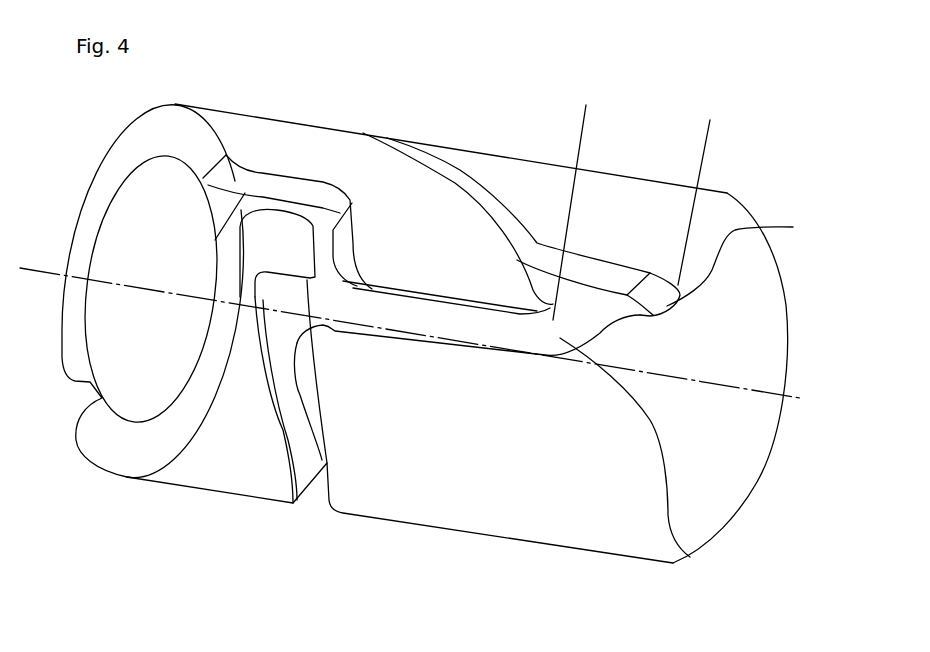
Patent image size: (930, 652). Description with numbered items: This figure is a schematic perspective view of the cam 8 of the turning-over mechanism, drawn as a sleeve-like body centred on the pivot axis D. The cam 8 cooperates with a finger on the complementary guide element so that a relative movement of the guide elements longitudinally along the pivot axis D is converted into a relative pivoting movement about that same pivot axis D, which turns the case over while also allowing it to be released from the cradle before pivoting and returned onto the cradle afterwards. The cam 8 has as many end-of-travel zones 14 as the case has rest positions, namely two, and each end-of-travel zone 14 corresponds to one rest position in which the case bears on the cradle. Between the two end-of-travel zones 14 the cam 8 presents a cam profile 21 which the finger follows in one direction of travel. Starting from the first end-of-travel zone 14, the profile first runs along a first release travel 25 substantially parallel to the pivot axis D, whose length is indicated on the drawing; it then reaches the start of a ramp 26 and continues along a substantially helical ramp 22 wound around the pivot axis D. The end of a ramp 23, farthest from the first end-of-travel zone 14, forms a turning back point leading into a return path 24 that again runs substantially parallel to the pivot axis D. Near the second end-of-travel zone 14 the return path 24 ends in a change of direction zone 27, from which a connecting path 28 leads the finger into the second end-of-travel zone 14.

The cam 8 is at (740, 313).
The end-of-travel zone 14 is at (744, 261).
The cam profile 21 is at (327, 410).
The substantially helical ramp 22 is at (448, 170).
The end of a ramp 23 is at (287, 290).
The return path 24 is at (503, 328).
The first release travel 25 is at (703, 153).
The start of a ramp 26 is at (528, 278).
The change of direction zone 27 is at (690, 557).
The connecting path 28 is at (570, 306).
The pivot axis D is at (726, 383).